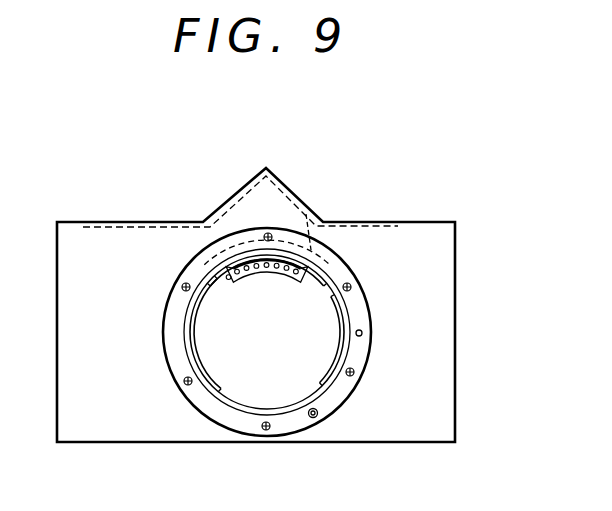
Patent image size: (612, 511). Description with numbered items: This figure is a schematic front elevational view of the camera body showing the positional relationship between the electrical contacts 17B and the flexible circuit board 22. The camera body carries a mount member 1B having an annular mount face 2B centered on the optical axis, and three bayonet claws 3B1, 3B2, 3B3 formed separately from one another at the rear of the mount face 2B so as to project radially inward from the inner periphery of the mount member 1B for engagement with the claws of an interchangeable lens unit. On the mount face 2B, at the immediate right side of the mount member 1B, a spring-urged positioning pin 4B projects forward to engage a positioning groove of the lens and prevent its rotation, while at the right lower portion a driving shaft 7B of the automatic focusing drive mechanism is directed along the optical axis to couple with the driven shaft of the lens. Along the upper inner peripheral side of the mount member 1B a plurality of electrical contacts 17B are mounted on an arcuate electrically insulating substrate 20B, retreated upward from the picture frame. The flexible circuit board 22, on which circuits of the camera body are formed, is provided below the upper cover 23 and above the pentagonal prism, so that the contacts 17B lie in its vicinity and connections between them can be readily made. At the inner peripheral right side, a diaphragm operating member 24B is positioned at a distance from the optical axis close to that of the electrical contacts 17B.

The mount member 1B is at (370, 307).
The annular mount face 2B is at (299, 424).
The bayonet claw 3B1 is at (295, 257).
The bayonet claw 3B2 is at (190, 352).
The bayonet claw 3B3 is at (342, 359).
The positioning pin 4B is at (362, 333).
The driving shaft 7B is at (318, 413).
The electrical contacts 17B is at (240, 278).
The electrically insulating substrate 20B is at (283, 276).
The flexible circuit board 22 is at (306, 214).
The upper cover 23 is at (415, 222).
The diaphragm operating member 24B is at (331, 308).